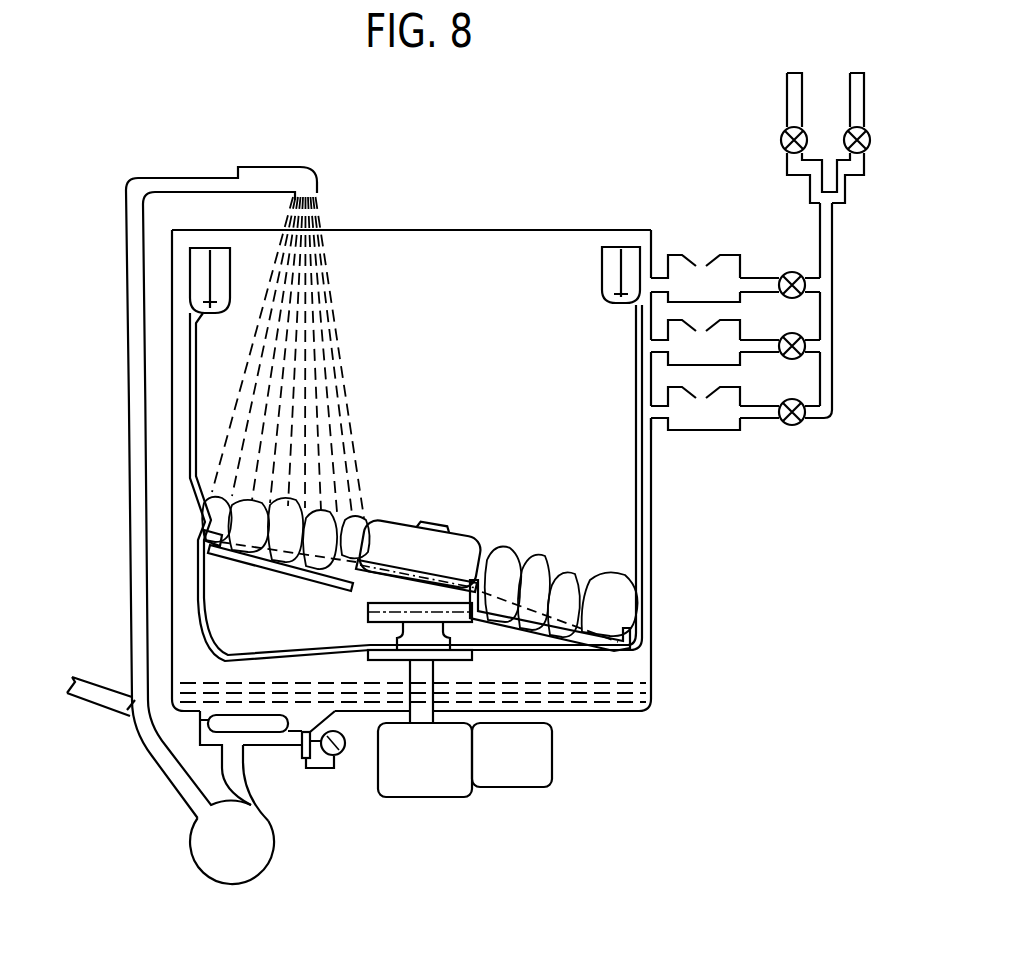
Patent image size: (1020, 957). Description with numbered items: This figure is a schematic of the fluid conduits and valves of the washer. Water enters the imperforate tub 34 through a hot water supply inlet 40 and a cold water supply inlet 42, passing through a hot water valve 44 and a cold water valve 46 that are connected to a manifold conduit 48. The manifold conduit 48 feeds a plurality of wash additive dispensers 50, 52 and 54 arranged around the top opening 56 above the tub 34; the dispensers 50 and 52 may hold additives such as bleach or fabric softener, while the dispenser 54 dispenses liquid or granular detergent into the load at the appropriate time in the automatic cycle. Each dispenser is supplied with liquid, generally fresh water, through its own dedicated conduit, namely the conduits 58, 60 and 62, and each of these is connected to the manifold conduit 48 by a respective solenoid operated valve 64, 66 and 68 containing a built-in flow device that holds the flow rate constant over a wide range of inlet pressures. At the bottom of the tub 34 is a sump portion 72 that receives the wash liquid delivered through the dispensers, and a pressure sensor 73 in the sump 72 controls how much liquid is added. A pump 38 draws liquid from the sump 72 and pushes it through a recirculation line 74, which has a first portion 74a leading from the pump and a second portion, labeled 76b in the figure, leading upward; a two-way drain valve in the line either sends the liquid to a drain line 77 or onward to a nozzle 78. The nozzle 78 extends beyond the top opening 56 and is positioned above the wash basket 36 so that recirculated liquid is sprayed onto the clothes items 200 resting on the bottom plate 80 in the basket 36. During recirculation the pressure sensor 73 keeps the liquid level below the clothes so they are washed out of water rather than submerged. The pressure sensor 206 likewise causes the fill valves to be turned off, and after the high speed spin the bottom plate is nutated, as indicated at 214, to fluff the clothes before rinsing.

The imperforate tub 34 is at (654, 247).
The wash basket 36 is at (653, 548).
The pump 38 is at (260, 874).
The hot water supply inlet 40 is at (787, 100).
The cold water supply inlet 42 is at (864, 102).
The hot water valve 44 is at (782, 145).
The cold water valve 46 is at (870, 143).
The manifold conduit 48 is at (833, 253).
The wash additive dispenser 50 is at (732, 431).
The wash additive dispenser 52 is at (740, 372).
The wash additive dispenser 54 is at (724, 262).
The top opening 56 is at (481, 230).
The conduit 58 is at (768, 419).
The conduit 60 is at (758, 340).
The conduit 62 is at (763, 277).
The solenoid operated valve 64 is at (803, 424).
The solenoid operated valve 66 is at (797, 333).
The solenoid operated valve 68 is at (792, 272).
The sump portion 72 is at (270, 745).
The pressure sensor 73 is at (336, 773).
The recirculation line 74 is at (128, 459).
The first portion of recirculation line 74a is at (168, 775).
The recirculation pipe upper portion 76b is at (128, 352).
The drain line 77 is at (100, 676).
The nozzle 78 is at (256, 168).
The bottom plate 80 is at (259, 566).
The clothes items 200 is at (513, 543).
The pressure sensor 206 is at (307, 768).
The nutating step 214 is at (282, 715).